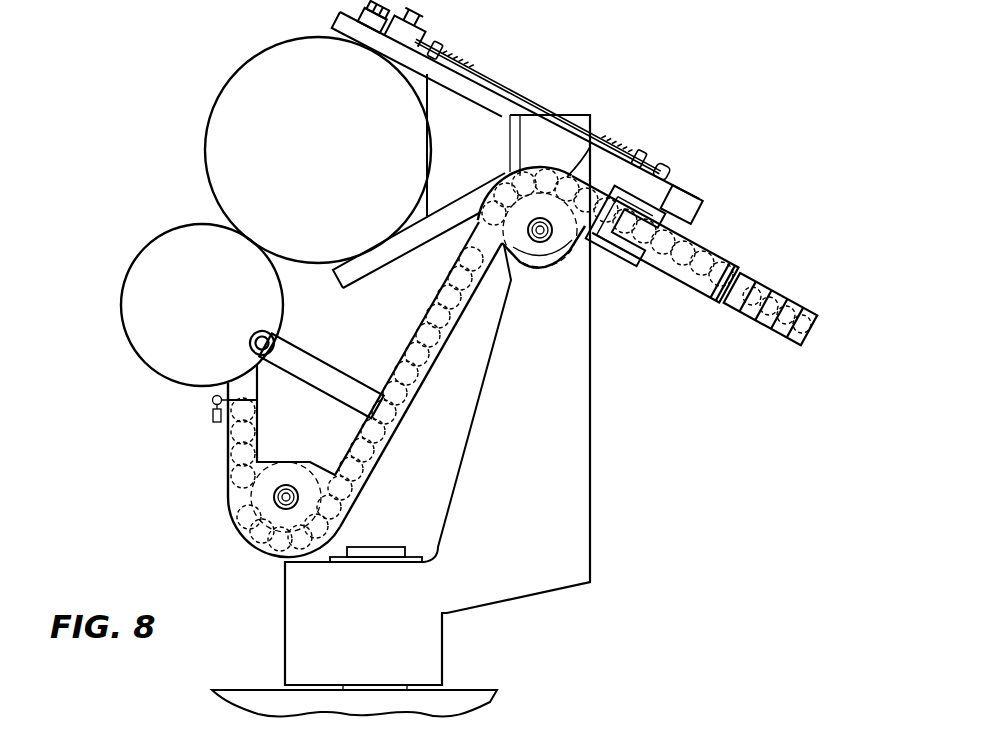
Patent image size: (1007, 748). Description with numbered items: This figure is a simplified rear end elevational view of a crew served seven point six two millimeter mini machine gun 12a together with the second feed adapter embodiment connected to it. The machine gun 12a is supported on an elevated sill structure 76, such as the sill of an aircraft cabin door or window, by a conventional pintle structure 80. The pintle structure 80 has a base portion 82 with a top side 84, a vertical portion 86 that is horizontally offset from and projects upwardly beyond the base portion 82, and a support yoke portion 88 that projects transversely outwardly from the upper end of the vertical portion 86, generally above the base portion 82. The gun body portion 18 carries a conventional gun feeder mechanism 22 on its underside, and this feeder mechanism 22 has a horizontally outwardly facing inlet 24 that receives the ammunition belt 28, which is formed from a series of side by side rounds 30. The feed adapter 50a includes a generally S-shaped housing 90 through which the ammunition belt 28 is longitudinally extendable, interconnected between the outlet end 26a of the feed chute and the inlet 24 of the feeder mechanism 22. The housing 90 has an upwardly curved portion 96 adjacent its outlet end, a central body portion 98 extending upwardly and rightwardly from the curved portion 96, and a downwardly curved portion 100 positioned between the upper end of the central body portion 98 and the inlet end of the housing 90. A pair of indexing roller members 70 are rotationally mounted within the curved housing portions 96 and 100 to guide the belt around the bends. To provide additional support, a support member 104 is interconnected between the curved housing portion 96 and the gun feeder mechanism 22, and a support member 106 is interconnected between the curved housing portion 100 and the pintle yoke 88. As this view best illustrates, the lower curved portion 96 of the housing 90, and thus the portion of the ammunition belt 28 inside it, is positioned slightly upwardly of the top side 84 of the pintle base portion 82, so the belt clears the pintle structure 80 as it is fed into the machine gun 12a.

The machine gun 12a is at (220, 64).
The body portion 18 is at (305, 163).
The gun feeder mechanism 22 is at (189, 317).
The inlet 24 is at (258, 395).
The outlet end portion 26a is at (732, 310).
The ammunition belt 28 is at (234, 460).
The ammunition rounds 30 is at (546, 170).
The feed adapter 50a is at (448, 370).
The indexing roller members 70 is at (566, 282).
The elevated sill structure 76 is at (326, 712).
The pintle structure 80 is at (600, 533).
The base portion 82 is at (283, 651).
The top side 84 is at (303, 564).
The vertical portion 86 is at (594, 471).
The support yoke portion 88 is at (390, 266).
The housing 90 is at (391, 457).
The upwardly curved portion 96 is at (229, 528).
The central body portion 98 is at (416, 397).
The downwardly curved portion 100 is at (593, 141).
The support member 104 is at (322, 357).
The support member 106 is at (486, 72).